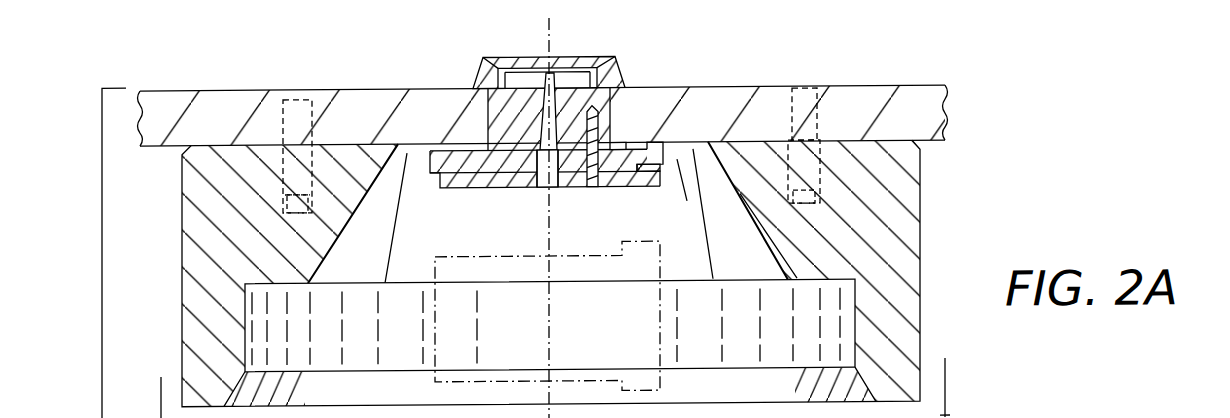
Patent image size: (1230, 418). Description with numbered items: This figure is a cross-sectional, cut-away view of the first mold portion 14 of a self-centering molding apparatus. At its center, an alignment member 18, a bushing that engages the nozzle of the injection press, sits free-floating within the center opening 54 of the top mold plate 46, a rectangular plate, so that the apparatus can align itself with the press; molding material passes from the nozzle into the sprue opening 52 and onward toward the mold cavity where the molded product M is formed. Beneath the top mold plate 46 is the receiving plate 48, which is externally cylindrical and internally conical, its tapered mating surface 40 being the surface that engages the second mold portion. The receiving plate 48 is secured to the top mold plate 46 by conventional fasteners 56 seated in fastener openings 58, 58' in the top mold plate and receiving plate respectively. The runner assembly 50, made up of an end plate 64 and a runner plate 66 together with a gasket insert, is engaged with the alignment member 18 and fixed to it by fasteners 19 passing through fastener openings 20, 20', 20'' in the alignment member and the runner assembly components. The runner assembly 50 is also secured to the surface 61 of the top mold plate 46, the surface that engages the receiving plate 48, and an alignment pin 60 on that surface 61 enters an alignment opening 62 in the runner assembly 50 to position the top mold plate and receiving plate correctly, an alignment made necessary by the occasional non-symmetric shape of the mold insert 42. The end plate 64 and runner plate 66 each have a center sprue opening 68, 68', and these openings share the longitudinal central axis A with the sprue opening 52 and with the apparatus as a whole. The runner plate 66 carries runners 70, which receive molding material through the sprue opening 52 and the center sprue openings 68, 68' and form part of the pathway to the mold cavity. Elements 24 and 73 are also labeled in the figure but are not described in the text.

The first mold portion 14 is at (592, 234).
The alignment member 18 is at (475, 72).
The fasteners 19 is at (620, 143).
The fastener opening 20 is at (662, 98).
The fastener opening 20' is at (640, 199).
The fastener opening 20'' is at (547, 289).
The base plate 24 is at (424, 413).
The tapered mating surface 40 is at (352, 215).
The mold insert 42 is at (664, 376).
The top mold plate 46 is at (935, 121).
The receiving plate 48 is at (900, 228).
The runner assembly 50 is at (484, 198).
The sprue opening 52 is at (590, 57).
The center opening 54 is at (488, 104).
The fasteners 56 is at (803, 108).
The fastener opening 58 is at (840, 129).
The fastener opening 58' is at (920, 174).
The alignment pin 60 is at (661, 158).
The surface 61 is at (165, 146).
The alignment opening 62 is at (596, 108).
The end plate 64 is at (487, 108).
The runner plate 66 is at (432, 183).
The center sprue opening 68 is at (526, 189).
The center sprue opening 68' is at (529, 203).
The runners 70 is at (470, 189).
The base 73 is at (699, 413).
The longitudinal central axis A is at (551, 27).
The molded product M is at (660, 342).